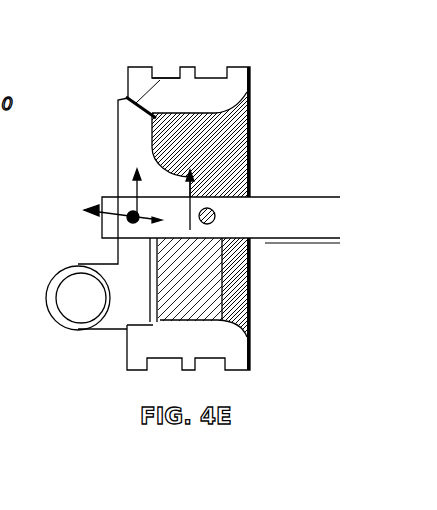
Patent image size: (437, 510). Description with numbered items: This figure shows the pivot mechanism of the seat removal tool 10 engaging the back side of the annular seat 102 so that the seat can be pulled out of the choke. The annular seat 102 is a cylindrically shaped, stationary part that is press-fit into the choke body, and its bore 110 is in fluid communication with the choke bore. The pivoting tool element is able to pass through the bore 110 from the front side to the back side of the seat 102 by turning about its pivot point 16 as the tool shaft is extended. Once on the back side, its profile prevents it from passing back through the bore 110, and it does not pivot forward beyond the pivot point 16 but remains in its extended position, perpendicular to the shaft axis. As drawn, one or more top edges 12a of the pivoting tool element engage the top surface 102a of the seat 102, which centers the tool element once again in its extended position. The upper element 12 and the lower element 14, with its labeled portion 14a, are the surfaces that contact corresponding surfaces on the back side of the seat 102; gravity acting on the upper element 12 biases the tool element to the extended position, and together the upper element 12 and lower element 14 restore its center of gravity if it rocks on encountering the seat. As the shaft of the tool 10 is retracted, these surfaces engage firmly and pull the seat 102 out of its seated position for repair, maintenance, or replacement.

The tool 10 is at (315, 155).
The upper element 12 is at (108, 112).
The top edge 12a is at (124, 94).
The lower element 14 is at (45, 337).
The wall of second housing member 14a is at (133, 310).
The pivot point 16 is at (98, 223).
The annular seat 102 is at (153, 318).
The top surface of seat 102a is at (160, 77).
The bore of seat 110 is at (263, 116).